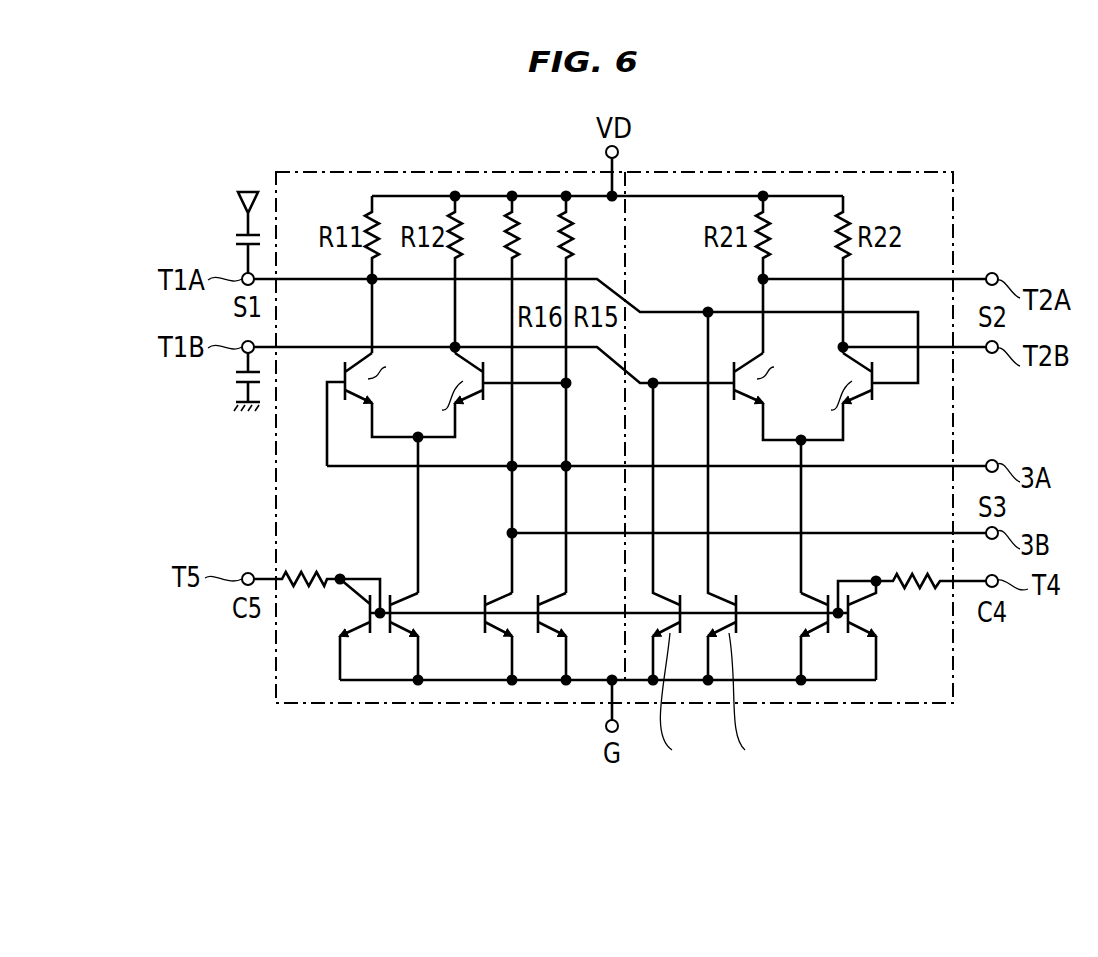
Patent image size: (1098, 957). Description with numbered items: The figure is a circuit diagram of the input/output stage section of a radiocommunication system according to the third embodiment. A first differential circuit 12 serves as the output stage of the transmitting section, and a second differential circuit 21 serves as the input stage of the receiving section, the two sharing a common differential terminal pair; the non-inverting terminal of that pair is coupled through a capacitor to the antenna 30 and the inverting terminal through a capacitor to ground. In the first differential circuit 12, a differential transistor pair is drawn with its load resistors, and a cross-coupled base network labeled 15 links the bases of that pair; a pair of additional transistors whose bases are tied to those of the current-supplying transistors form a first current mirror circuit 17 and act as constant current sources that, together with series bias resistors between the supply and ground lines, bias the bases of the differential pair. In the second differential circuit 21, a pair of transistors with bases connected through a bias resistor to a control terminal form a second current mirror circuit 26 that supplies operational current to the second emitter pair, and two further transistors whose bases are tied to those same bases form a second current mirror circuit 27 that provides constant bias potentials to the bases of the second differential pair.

The first differential circuit 12 is at (349, 170).
The second differential circuit 21 is at (767, 170).
The antenna 30 is at (238, 199).
The first differential transistor pair 15 is at (352, 436).
The second current mirror circuit 26 is at (880, 418).
The first current mirror circuit 17 is at (332, 682).
The second current mirror circuit 27 is at (907, 690).